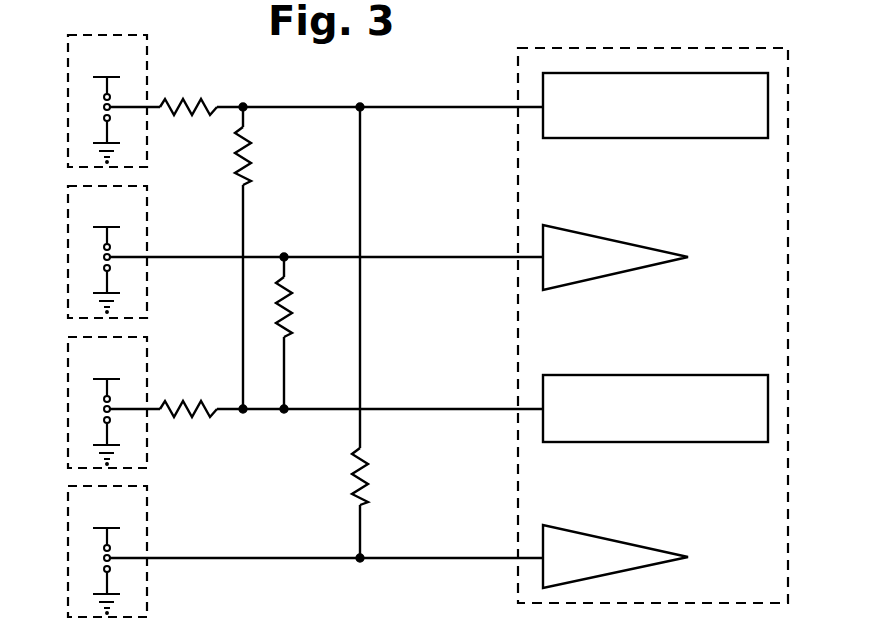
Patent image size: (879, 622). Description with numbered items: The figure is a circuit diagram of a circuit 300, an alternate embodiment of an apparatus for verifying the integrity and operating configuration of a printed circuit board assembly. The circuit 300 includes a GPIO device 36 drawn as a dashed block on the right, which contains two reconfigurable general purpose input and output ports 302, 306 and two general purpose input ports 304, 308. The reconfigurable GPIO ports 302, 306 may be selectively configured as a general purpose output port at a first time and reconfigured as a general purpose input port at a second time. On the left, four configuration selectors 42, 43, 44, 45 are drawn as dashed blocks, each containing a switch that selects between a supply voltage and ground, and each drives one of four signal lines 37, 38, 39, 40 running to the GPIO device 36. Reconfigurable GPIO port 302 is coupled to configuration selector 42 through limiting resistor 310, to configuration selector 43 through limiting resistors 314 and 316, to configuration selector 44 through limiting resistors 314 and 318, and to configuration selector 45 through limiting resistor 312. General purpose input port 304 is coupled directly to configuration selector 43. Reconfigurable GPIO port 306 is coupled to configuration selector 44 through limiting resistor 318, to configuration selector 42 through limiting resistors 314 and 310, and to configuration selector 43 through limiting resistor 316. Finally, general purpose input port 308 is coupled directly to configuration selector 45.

The circuit 300 is at (479, 26).
The GPIO device 36 is at (790, 100).
The signal line 37 is at (433, 105).
The signal line 38 is at (433, 255).
The signal line 39 is at (433, 407).
The signal line 40 is at (433, 556).
The configuration selector 42 is at (68, 80).
The configuration selector 43 is at (68, 231).
The configuration selector 44 is at (68, 382).
The configuration selector 45 is at (68, 531).
The reconfigurable GPIO port 302 is at (622, 140).
The general purpose input port 304 is at (620, 275).
The reconfigurable GPIO port 306 is at (693, 443).
The general purpose input port 308 is at (620, 538).
The limiting resistor 310 is at (176, 101).
The limiting resistor 312 is at (354, 479).
The limiting resistor 314 is at (249, 143).
The limiting resistor 316 is at (292, 293).
The limiting resistor 318 is at (176, 403).